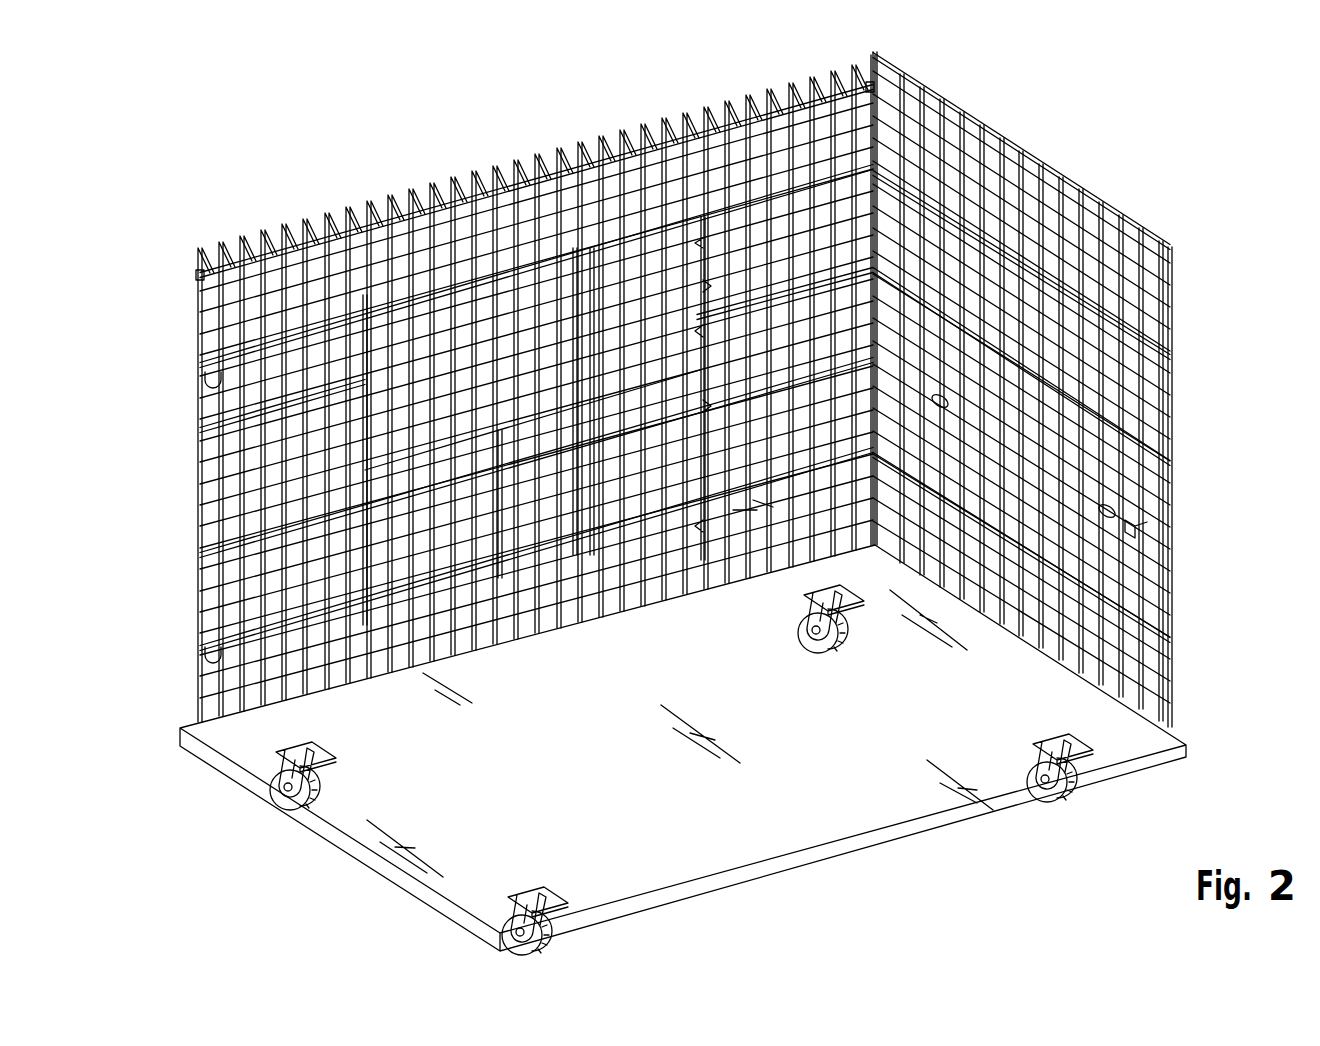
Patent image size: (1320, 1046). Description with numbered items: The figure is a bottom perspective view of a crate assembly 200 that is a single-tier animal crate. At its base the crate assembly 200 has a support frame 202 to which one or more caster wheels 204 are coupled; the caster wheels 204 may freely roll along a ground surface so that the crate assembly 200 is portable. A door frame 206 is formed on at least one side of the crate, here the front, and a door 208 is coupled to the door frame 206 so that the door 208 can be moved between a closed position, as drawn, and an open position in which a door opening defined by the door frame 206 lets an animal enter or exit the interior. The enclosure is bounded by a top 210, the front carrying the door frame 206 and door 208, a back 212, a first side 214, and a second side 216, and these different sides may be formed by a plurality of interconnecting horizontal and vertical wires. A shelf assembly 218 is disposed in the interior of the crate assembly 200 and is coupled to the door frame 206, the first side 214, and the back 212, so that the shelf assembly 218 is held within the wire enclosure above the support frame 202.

The crate assembly 200 is at (286, 155).
The support frame 202 is at (812, 815).
The caster wheels 204 is at (1072, 800).
The door frame 206 is at (233, 545).
The door 208 is at (417, 487).
The top 210 is at (483, 210).
The back 212 is at (1103, 385).
The first side 214 is at (1157, 452).
The second side 216 is at (233, 408).
The shelf assembly 218 is at (1153, 528).